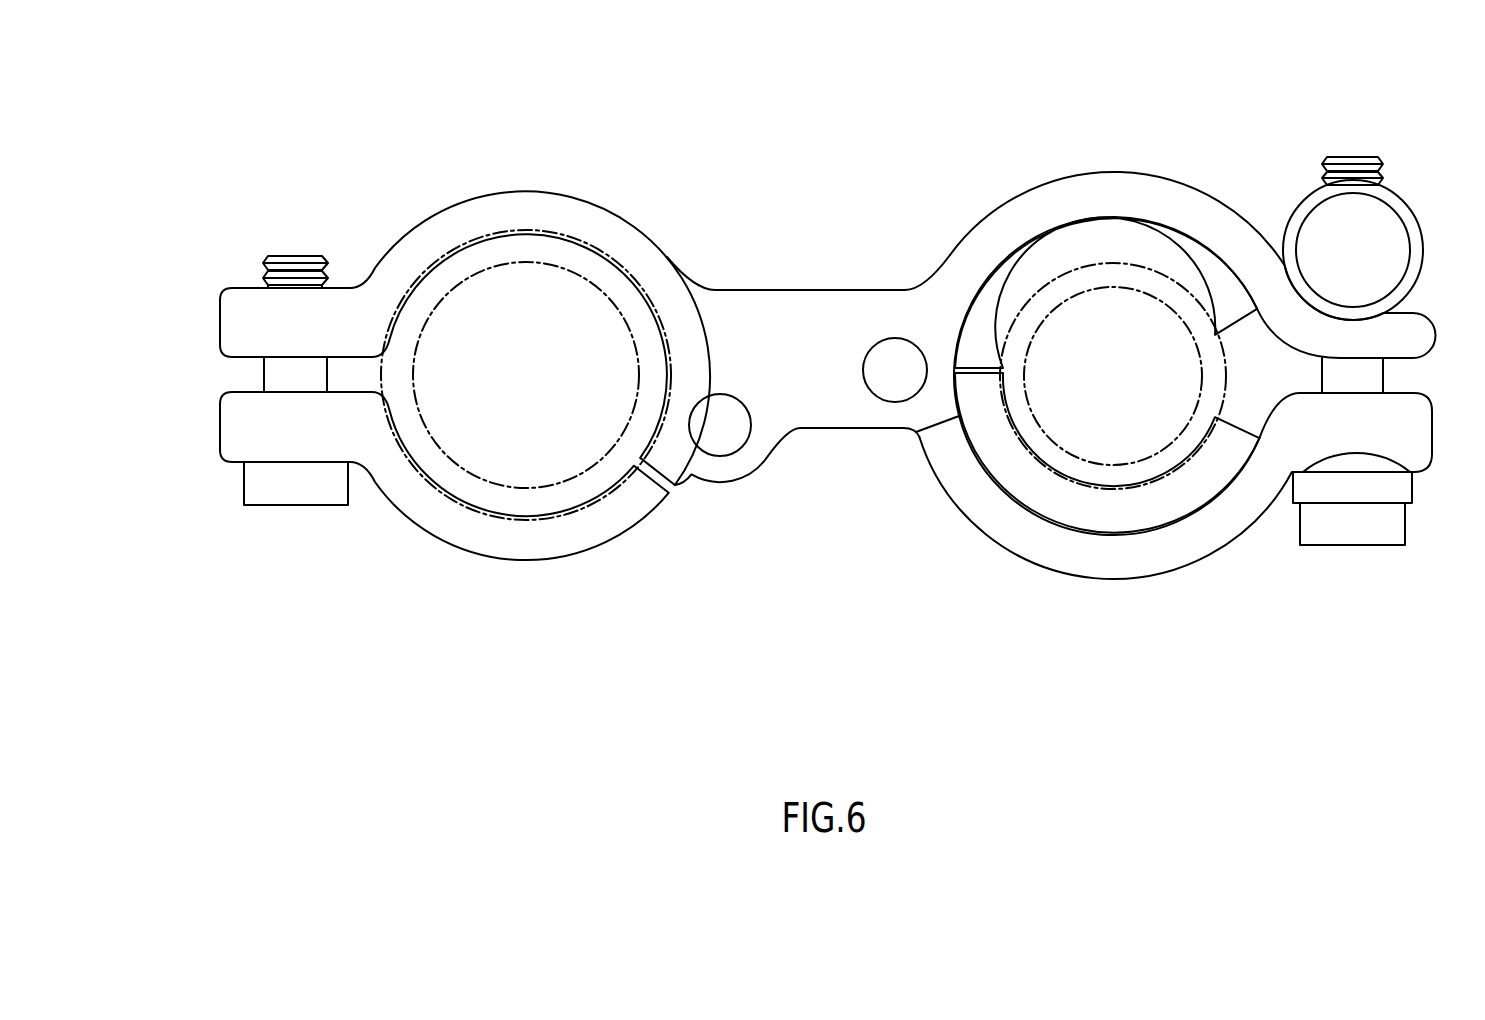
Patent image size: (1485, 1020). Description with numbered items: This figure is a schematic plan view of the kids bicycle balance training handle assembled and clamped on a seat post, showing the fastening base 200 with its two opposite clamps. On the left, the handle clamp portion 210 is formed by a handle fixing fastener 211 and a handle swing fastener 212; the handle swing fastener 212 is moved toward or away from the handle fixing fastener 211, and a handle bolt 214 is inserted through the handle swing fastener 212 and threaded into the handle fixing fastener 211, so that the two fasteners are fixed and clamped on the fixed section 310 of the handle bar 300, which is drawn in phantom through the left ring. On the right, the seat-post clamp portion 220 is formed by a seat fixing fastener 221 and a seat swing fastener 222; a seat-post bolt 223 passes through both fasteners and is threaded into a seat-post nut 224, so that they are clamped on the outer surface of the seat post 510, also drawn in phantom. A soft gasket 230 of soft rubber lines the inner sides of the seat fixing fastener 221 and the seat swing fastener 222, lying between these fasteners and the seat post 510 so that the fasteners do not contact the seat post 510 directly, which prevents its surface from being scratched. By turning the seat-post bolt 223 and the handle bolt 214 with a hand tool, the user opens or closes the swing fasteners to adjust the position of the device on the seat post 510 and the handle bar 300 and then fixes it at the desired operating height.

The fastening base 200 is at (740, 166).
The handle clamp portion 210 is at (358, 596).
The handle fixing fastener 211 is at (422, 236).
The handle swing fastener 212 is at (497, 545).
The handle bolt 214 is at (253, 487).
The handle bar 300 is at (540, 262).
The fixed section 310 is at (526, 375).
The seat-post clamp portion 220 is at (1243, 602).
The seat fixing fastener 221 is at (1047, 203).
The seat swing fastener 222 is at (970, 503).
The seat-post bolt 223 is at (1358, 528).
The seat-post nut 224 is at (1310, 205).
The soft gasket 230 is at (998, 296).
The seat post 510 is at (1138, 465).